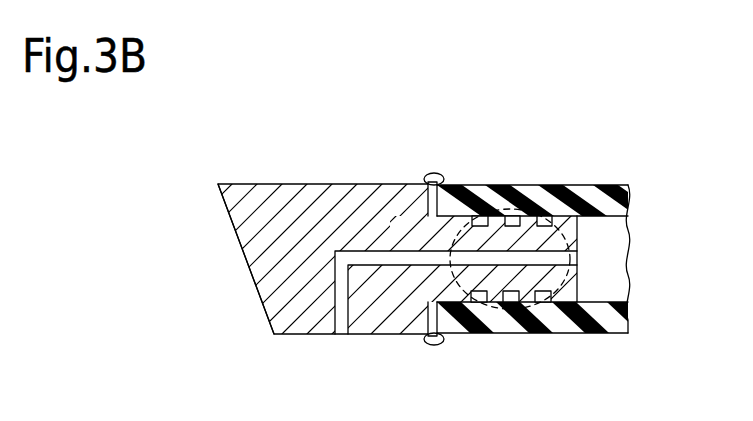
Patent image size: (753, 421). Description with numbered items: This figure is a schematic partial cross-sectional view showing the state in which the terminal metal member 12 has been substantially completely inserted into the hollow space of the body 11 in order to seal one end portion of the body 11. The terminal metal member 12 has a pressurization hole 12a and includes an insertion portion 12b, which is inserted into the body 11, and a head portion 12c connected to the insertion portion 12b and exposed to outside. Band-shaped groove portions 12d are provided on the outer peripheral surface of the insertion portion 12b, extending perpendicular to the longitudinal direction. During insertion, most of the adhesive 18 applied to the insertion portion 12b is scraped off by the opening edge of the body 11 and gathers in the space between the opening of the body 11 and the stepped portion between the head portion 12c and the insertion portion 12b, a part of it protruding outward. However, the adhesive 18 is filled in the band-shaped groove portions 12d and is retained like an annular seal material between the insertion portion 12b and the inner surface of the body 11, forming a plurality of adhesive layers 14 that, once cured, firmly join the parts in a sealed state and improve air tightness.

The body 11 is at (590, 333).
The terminal metal member 12 is at (209, 211).
The pressurization hole 12a is at (342, 333).
The insertion portion 12b is at (588, 185).
The head portion 12c is at (253, 268).
The band-shaped groove portions 12d is at (507, 185).
The adhesive layers 14 is at (548, 183).
The adhesive 18 is at (432, 176).